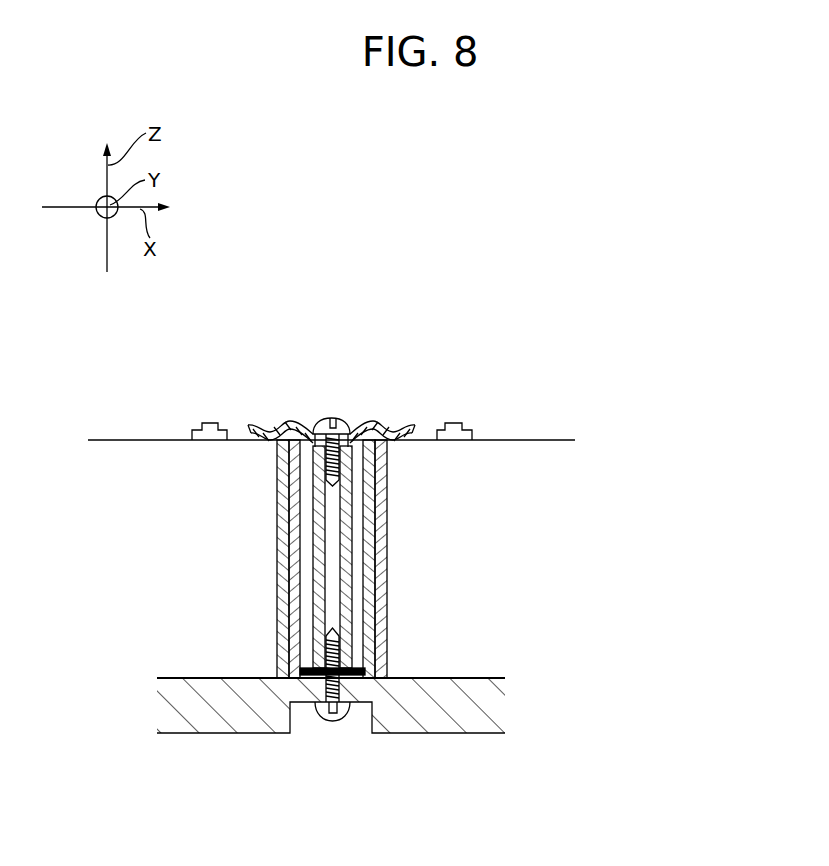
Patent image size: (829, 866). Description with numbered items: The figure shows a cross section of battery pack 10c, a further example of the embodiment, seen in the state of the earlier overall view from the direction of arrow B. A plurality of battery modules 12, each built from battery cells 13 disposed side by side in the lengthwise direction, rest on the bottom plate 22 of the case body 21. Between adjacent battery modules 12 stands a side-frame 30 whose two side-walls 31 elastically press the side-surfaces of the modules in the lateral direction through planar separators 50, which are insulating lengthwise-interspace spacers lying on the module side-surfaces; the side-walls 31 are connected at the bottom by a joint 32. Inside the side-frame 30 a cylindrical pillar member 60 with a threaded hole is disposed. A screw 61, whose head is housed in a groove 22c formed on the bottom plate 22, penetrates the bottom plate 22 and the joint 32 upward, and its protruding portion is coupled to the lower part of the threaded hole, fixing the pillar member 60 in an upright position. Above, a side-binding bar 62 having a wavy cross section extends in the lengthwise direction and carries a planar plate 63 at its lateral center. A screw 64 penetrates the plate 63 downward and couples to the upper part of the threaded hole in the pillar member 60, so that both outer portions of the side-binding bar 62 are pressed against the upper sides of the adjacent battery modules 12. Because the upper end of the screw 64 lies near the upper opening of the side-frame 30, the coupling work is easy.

The battery pack 10c is at (443, 346).
The battery module 12 is at (134, 438).
The battery cell 13 is at (489, 438).
The case body 21 is at (213, 742).
The bottom plate 22 is at (249, 734).
The groove 22c is at (306, 718).
The side-frame 30 is at (372, 556).
The side-wall 31 is at (290, 583).
The joint 32 is at (372, 648).
The separator 50 is at (277, 508).
The pillar member 60 is at (346, 535).
The screw 61 is at (351, 720).
The side-binding bar 62 is at (287, 417).
The plate 63 is at (347, 414).
The screw 64 is at (321, 414).